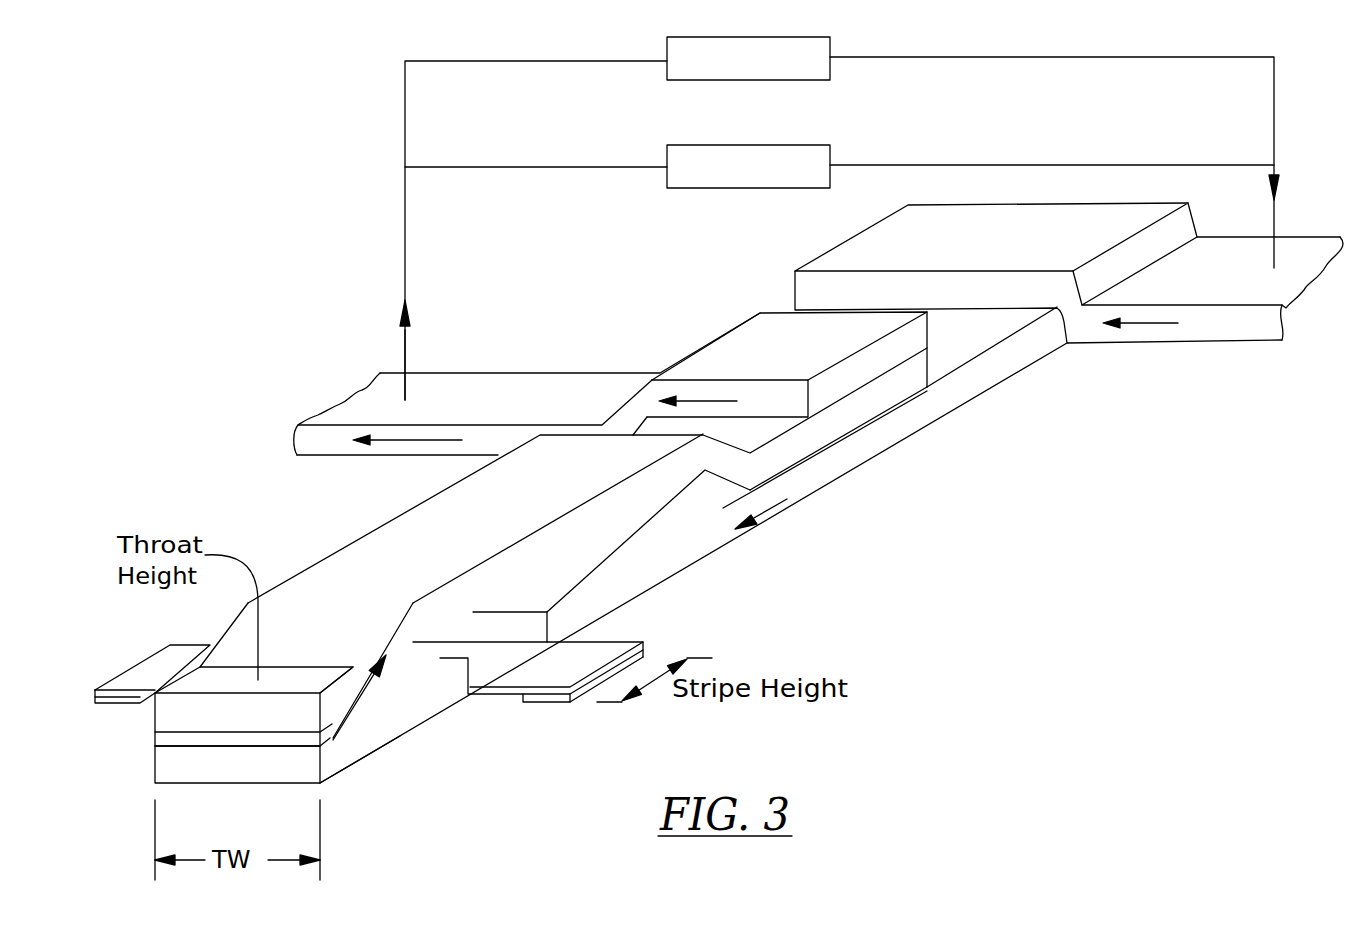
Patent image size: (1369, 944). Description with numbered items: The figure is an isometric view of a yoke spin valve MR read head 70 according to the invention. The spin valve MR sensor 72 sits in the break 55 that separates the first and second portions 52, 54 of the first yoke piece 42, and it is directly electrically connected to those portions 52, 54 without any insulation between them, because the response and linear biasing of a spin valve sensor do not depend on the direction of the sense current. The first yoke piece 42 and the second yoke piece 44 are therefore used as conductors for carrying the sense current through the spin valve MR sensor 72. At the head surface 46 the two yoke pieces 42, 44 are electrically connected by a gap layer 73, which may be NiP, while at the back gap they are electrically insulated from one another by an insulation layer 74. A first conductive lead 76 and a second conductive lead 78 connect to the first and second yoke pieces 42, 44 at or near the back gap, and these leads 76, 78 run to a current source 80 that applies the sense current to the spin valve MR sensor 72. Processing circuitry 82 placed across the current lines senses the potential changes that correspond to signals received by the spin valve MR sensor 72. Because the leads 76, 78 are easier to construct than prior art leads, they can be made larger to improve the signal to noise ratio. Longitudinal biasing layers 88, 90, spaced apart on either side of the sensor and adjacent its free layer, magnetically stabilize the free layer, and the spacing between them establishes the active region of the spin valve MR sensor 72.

The first yoke piece 42 is at (619, 609).
The second yoke piece 44 is at (553, 562).
The head surface 46 is at (162, 712).
The first portion of first yoke piece 52 is at (373, 733).
The second portion of first yoke piece 54 is at (771, 331).
The break 55 is at (462, 632).
The yoke spin valve MR read head 70 is at (353, 308).
The spin valve MR sensor 72 is at (498, 661).
The gap layer 73 is at (232, 740).
The insulation layer 74 is at (866, 424).
The first conductive lead 76 is at (1234, 252).
The second conductive lead 78 is at (482, 392).
The current source 80 is at (830, 43).
The processing circuitry 82 is at (766, 145).
The longitudinal biasing layer 88 is at (102, 708).
The longitudinal biasing layer 90 is at (547, 703).